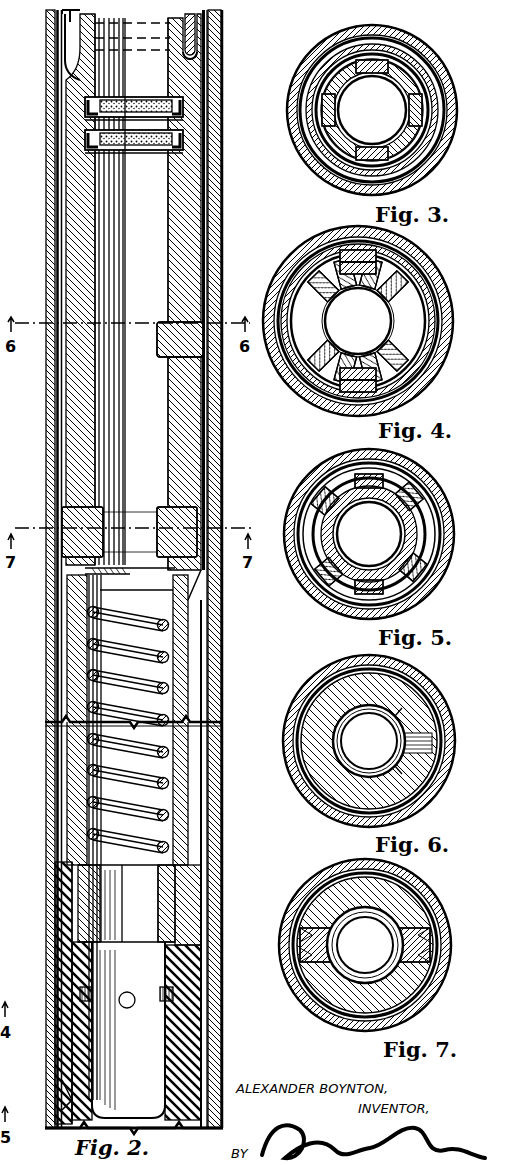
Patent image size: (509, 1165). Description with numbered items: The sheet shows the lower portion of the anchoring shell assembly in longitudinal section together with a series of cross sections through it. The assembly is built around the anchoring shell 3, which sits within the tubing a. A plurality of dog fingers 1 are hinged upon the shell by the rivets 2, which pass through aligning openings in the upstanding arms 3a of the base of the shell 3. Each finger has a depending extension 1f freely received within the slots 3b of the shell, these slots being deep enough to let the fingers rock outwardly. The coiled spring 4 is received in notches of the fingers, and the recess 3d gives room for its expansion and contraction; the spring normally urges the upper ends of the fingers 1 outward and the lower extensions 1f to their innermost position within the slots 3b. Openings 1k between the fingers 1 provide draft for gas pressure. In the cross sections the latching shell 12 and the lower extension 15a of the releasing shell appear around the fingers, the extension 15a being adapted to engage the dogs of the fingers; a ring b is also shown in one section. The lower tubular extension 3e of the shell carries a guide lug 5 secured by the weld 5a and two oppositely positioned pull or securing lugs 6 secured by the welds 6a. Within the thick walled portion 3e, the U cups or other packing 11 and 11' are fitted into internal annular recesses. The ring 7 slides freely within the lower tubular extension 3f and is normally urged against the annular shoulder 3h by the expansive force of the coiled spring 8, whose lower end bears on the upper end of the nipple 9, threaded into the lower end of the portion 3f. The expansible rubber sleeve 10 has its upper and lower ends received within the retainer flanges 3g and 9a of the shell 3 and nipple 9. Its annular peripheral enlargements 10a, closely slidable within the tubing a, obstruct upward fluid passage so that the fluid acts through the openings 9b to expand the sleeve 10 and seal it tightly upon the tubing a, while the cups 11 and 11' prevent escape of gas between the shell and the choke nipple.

In FIG. 2, the tubing a is at (209, 260).
In FIG. 3, the tubing a is at (440, 62).
In FIG. 4, the tubing a is at (428, 395).
In FIG. 5, the tubing a is at (430, 582).
In FIG. 6, the tubing a is at (415, 677).
In FIG. 7, the tubing a is at (415, 888).
In FIG. 4, the liner b is at (330, 420).
In FIG. 3, the dog fingers 1 is at (330, 83).
In FIG. 4, the dog fingers 1 is at (428, 292).
In FIG. 2, the depending extension 1f is at (64, 60).
In FIG. 5, the depending extension 1f is at (425, 508).
In FIG. 3, the openings 1k is at (322, 48).
In FIG. 4, the rivets 2 is at (300, 291).
In FIG. 2, the anchoring shell 3 is at (78, 85).
In FIG. 4, the anchoring shell 3 is at (398, 318).
In FIG. 5, the anchoring shell 3 is at (403, 527).
In FIG. 4, the upstanding arms 3a is at (395, 268).
In FIG. 2, the slots 3b is at (190, 64).
In FIG. 5, the slots 3b is at (300, 500).
In FIG. 2, the recess 3d is at (197, 40).
In FIG. 5, the recess 3d is at (330, 600).
In FIG. 2, the lower tubular extension 3e is at (194, 211).
In FIG. 6, the lower tubular extension 3e is at (410, 787).
In FIG. 7, the lower tubular extension 3e is at (393, 998).
In FIG. 2, the lower tubular extension 3f is at (182, 678).
In FIG. 2, the retainer flange 3g is at (63, 910).
In FIG. 2, the annular shoulder 3h is at (195, 568).
In FIG. 2, the coiled spring 4 is at (64, 26).
In FIG. 4, the coiled spring 4 is at (300, 400).
In FIG. 5, the coiled spring 4 is at (430, 542).
In FIG. 2, the guide lug 5 is at (203, 357).
In FIG. 6, the guide lug 5 is at (398, 739).
In FIG. 2, the weld 5a is at (195, 322).
In FIG. 6, the weld 5a is at (432, 736).
In FIG. 2, the pull or securing lugs 6 is at (197, 520).
In FIG. 6, the pull or securing lugs 6 is at (400, 727).
In FIG. 7, the pull or securing lugs 6 is at (300, 946).
In FIG. 2, the welds 6a is at (69, 508).
In FIG. 7, the welds 6a is at (300, 925).
In FIG. 2, the ring 7 is at (176, 600).
In FIG. 6, the ring 7 is at (350, 775).
In FIG. 7, the ring 7 is at (315, 898).
In FIG. 2, the coiled spring 8 is at (190, 753).
In FIG. 2, the nipple 9 is at (164, 915).
In FIG. 2, the retainer flange 9a is at (62, 1092).
In FIG. 2, the openings 9b is at (134, 1004).
In FIG. 2, the expansible rubber sleeve 10 is at (195, 982).
In FIG. 2, the annular peripheral enlargements 10a is at (160, 1052).
In FIG. 2, the U cup packing 11 is at (165, 108).
In FIG. 2, the U cup packing 11' is at (167, 141).
In FIG. 3, the latching shell 12 is at (425, 120).
In FIG. 3, the lower extension 15a is at (422, 152).